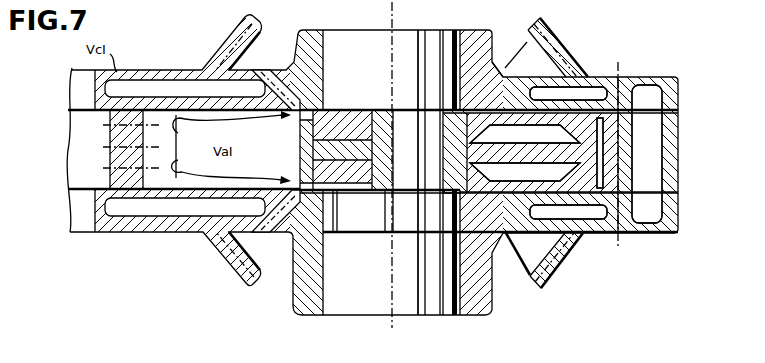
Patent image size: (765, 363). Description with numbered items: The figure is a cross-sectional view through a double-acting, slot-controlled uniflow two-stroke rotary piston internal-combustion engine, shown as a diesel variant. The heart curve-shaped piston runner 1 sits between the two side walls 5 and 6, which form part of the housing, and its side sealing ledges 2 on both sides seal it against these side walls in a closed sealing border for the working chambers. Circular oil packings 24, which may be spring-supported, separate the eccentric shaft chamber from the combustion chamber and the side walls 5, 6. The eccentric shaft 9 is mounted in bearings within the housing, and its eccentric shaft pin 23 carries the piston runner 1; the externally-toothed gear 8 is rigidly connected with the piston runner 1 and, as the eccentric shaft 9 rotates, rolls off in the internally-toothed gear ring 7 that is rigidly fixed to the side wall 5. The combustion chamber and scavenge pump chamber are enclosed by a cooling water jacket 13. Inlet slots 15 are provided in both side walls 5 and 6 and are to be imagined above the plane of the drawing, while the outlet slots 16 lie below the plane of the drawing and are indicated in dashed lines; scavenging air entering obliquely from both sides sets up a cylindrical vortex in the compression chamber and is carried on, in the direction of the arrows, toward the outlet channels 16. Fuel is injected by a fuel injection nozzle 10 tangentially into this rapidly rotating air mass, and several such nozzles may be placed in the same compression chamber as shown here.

The piston runner 1 is at (300, 155).
The side sealing ledges 2 is at (300, 112).
The side wall 5 is at (176, 178).
The side wall 6 is at (150, 115).
The internally-toothed gear ring 7 is at (336, 233).
The externally-toothed gear 8 is at (388, 233).
The eccentric shaft 9 is at (347, 42).
The fuel injection nozzle 10 is at (108, 147).
The cooling water jacket 13 is at (165, 92).
The inlet slots 15 is at (556, 47).
The outlet slots 16 is at (228, 46).
The eccentric shaft pin 23 is at (418, 108).
The oil packings 24 is at (497, 68).